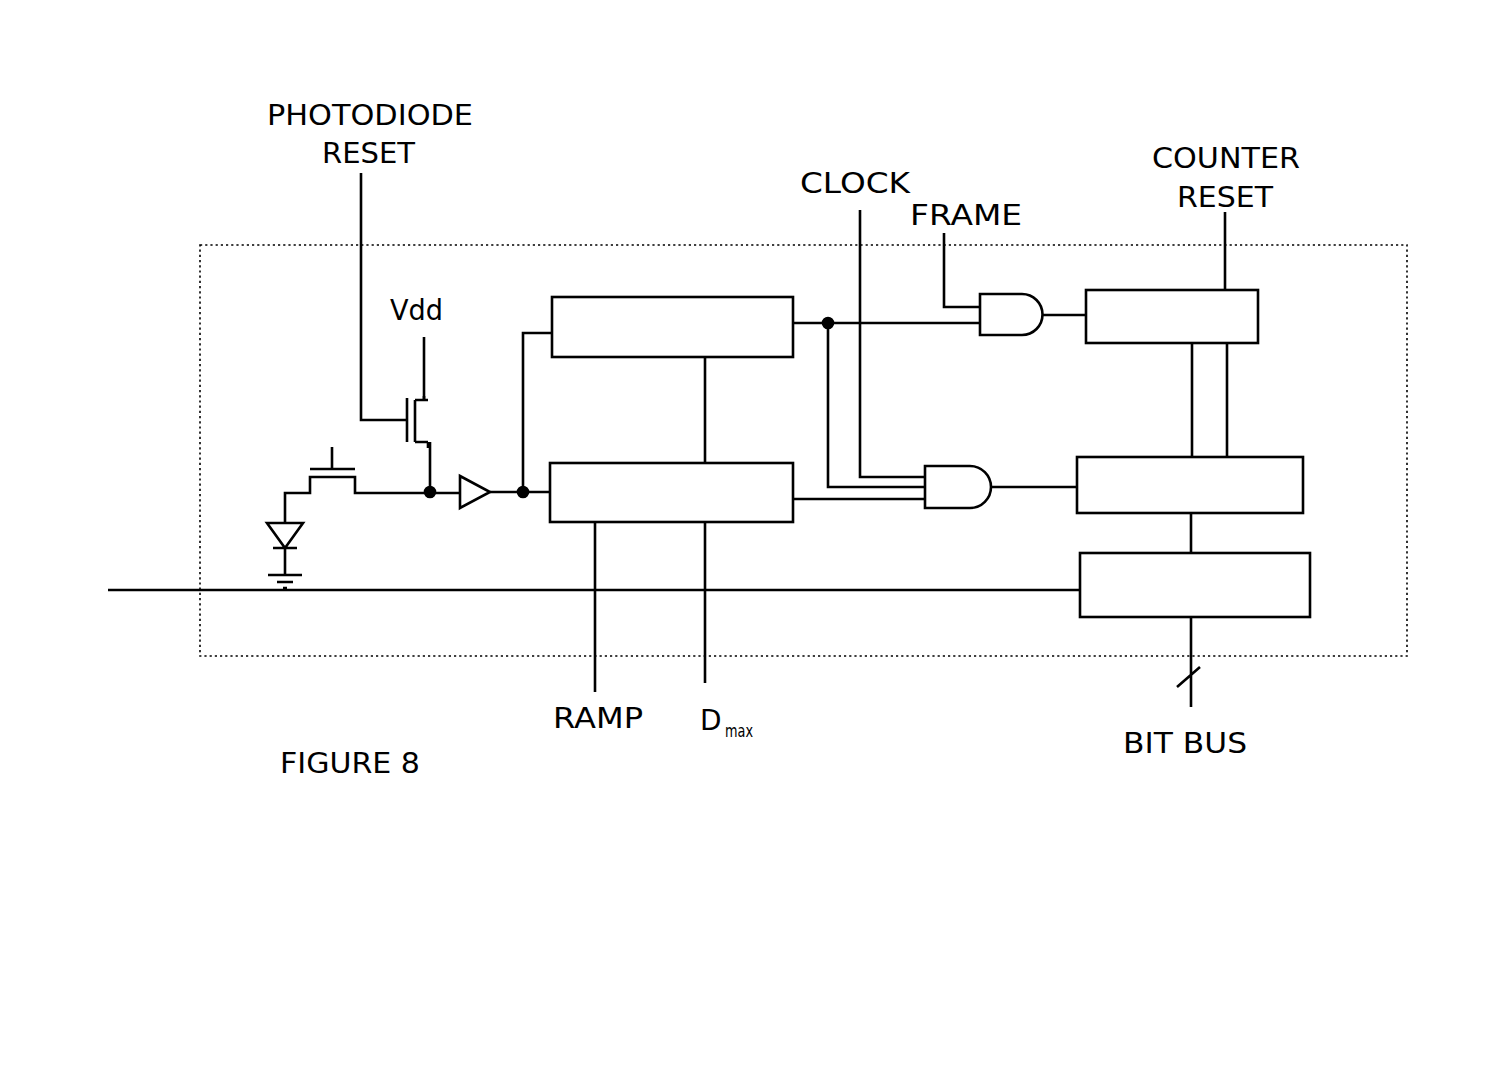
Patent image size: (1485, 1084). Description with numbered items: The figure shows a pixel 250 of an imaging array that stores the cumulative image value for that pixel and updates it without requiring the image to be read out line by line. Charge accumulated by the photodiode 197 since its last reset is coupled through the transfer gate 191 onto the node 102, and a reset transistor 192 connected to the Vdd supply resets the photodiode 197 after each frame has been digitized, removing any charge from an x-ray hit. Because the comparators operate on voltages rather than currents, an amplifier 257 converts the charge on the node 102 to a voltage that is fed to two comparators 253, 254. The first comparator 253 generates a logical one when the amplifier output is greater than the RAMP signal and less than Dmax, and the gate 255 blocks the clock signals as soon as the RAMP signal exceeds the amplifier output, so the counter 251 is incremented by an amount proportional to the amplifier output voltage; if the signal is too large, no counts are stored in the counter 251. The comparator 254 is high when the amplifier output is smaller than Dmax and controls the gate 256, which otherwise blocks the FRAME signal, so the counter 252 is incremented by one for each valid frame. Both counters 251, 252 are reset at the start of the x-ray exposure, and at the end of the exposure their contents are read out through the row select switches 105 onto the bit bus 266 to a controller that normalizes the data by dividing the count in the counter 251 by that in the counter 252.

The pixel 250 is at (1395, 375).
The transfer gate 191 is at (318, 465).
The reset transistor 192 is at (406, 405).
The photodiode 197 is at (300, 527).
The node 102 is at (425, 493).
The amplifier 257 is at (462, 503).
The comparator 254 is at (763, 352).
The first comparator 253 is at (777, 517).
The gate 256 is at (1022, 327).
The gate 255 is at (965, 505).
The counter 252 is at (1252, 330).
The counter 251 is at (1305, 493).
The row select switches 105 is at (1312, 575).
The bit bus 266 is at (1192, 705).